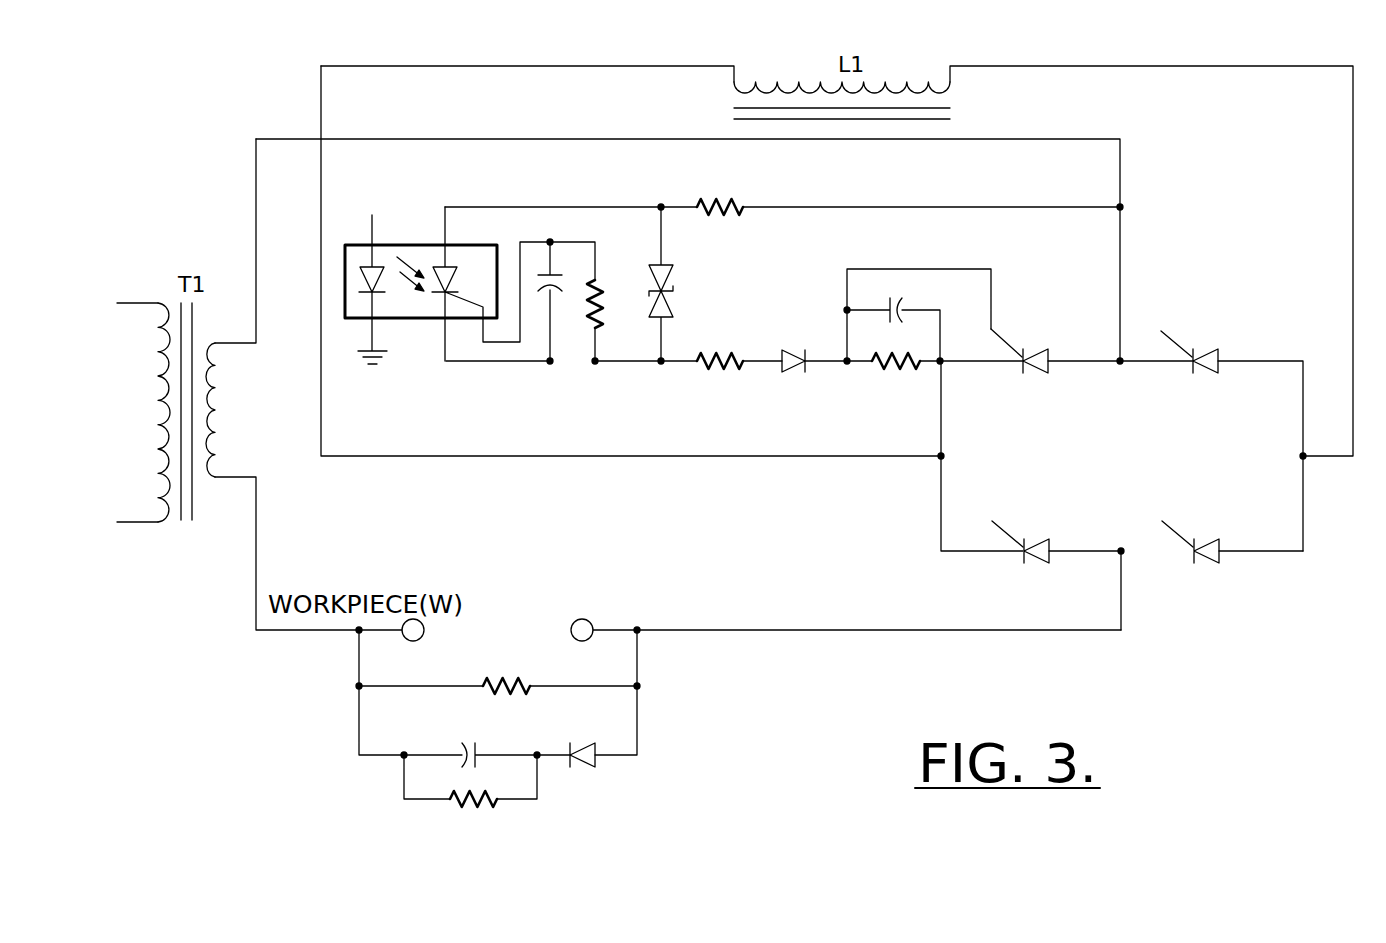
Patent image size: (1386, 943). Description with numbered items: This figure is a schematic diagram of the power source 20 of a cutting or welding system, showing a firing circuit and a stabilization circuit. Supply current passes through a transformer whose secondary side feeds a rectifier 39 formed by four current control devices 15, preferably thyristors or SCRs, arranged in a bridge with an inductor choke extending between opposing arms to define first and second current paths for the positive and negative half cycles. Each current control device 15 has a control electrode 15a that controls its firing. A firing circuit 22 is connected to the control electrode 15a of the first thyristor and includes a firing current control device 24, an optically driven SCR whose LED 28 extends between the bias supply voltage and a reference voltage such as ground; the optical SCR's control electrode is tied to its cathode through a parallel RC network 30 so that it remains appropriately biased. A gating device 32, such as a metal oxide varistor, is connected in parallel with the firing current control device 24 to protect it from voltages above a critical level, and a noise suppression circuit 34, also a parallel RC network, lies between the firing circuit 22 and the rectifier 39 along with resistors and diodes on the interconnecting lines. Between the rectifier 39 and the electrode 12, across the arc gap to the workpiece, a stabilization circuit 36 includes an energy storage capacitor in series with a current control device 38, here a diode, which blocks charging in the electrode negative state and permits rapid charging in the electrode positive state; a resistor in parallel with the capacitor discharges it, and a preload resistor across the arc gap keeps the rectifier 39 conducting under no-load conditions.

The electrode 12 is at (846, 603).
The current control devices 15 is at (1046, 351).
The control electrode 15a is at (1010, 345).
The power source 20 is at (1322, 582).
The firing circuit 22 is at (542, 207).
The firing current control device 24 is at (397, 320).
The LED 28 is at (367, 271).
The parallel RC network 30 is at (644, 348).
The gating device 32 is at (665, 275).
The noise suppression circuit 34 is at (911, 396).
The stabilization circuit 36 is at (661, 776).
The current control device 38 is at (588, 762).
The rectifier 39 is at (1305, 518).